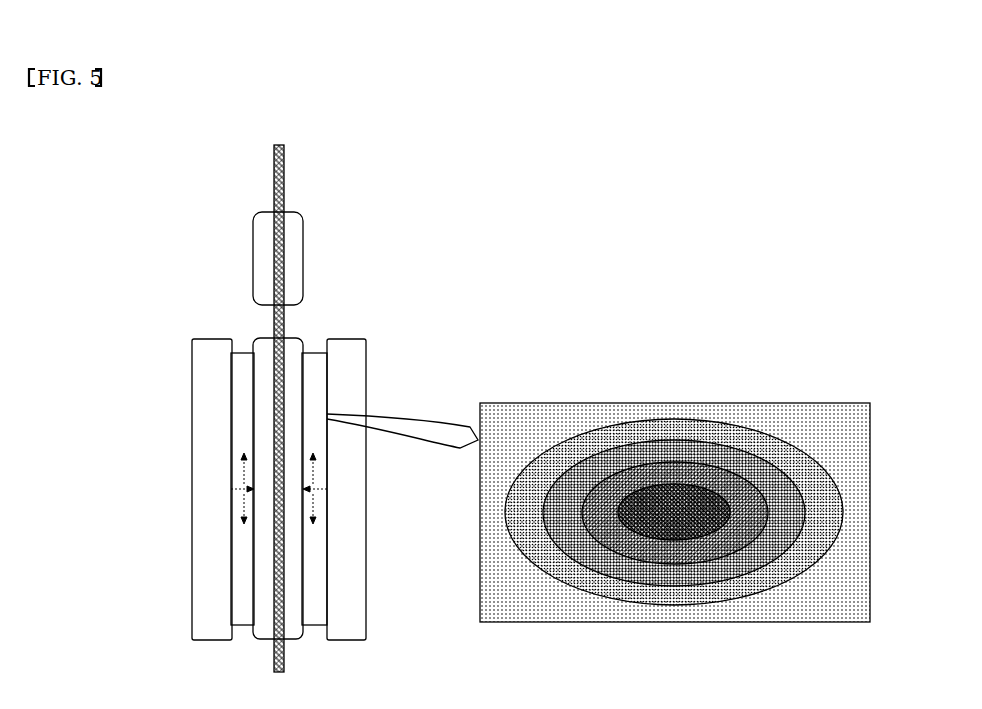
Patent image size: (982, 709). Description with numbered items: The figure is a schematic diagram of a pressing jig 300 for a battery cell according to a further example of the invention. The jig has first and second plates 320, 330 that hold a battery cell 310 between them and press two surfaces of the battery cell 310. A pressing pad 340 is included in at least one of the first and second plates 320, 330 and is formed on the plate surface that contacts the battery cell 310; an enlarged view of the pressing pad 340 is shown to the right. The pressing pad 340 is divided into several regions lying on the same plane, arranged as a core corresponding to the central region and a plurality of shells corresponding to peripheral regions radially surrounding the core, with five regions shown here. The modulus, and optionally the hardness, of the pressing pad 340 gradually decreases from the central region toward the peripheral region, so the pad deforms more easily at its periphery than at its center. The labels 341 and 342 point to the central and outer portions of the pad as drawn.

The pressing jig 300 is at (233, 408).
The battery cell 310 is at (249, 341).
The first plate 320 is at (192, 377).
The second plate 330 is at (366, 377).
The pressing pad 340 is at (675, 487).
The pattern center region 341 is at (680, 568).
The pattern background region 342 is at (843, 606).